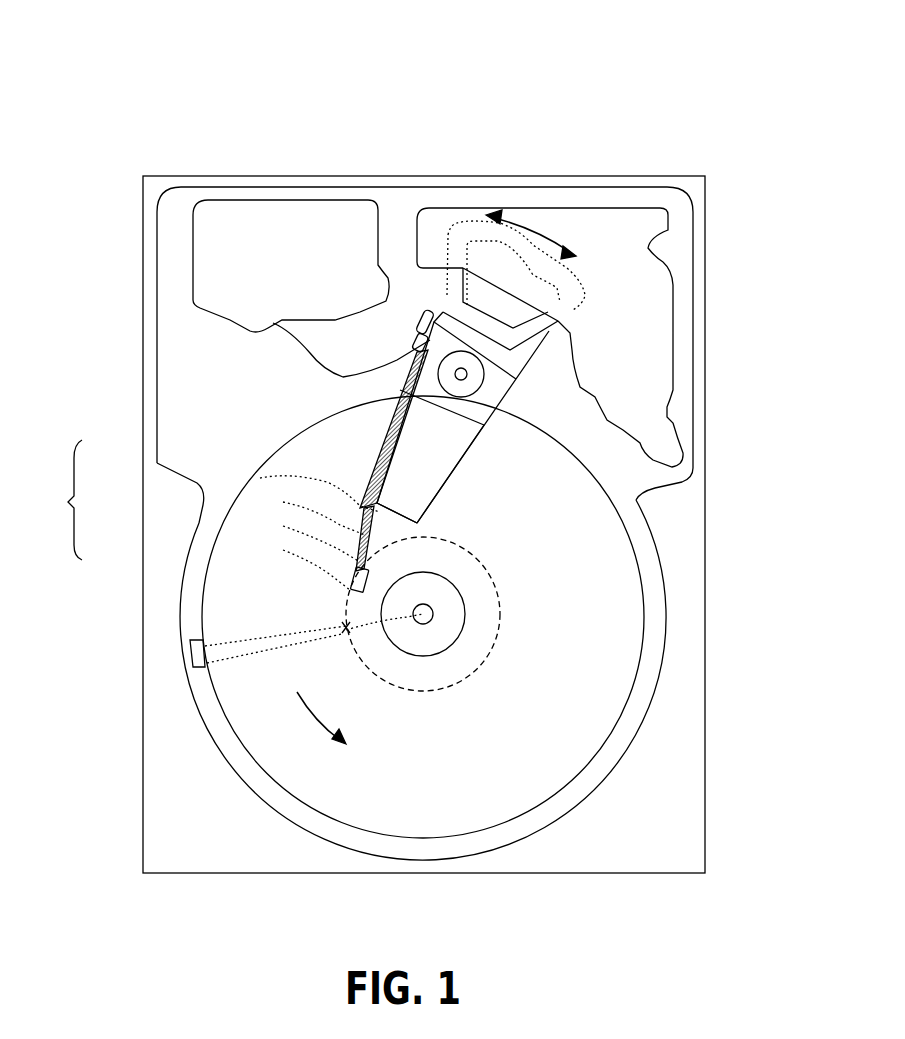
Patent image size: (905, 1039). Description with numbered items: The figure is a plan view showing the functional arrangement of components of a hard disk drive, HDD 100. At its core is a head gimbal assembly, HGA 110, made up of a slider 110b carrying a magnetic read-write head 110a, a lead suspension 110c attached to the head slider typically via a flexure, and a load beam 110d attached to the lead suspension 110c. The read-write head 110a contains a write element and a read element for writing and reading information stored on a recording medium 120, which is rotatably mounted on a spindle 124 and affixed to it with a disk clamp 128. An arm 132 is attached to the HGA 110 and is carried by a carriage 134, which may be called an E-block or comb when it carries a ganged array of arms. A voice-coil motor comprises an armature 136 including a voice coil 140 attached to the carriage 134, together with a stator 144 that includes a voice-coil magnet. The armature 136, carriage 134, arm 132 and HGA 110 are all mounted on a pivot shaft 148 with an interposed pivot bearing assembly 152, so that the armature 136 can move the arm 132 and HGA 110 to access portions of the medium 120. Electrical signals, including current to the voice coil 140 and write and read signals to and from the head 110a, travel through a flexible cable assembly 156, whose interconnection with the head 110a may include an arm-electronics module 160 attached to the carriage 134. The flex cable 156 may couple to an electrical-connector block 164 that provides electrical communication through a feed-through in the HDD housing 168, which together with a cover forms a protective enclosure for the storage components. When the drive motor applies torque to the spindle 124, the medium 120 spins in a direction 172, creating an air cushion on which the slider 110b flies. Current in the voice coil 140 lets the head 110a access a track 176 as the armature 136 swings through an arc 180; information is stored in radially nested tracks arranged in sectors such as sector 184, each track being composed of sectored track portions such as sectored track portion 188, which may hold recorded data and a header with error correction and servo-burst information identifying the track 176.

The hard disk drive 100 is at (88, 67).
The head gimbal assembly 110 is at (54, 500).
The magnetic read-write head 110a is at (283, 550).
The slider 110b is at (283, 526).
The lead suspension 110c is at (283, 502).
The load beam 110d is at (260, 478).
The recording medium 120 is at (583, 578).
The spindle 124 is at (433, 612).
The disk clamp 128 is at (447, 630).
The arm 132 is at (418, 473).
The carriage 134 is at (476, 404).
The armature 136 is at (423, 255).
The voice coil 140 is at (450, 295).
The stator 144 is at (647, 290).
The pivot shaft 148 is at (466, 372).
The pivot bearing assembly 152 is at (472, 387).
The flexible cable assembly 156 is at (298, 351).
The arm-electronics module 160 is at (418, 340).
The electrical-connector block 164 is at (215, 262).
The HDD housing 168 is at (690, 189).
The direction 172 is at (340, 720).
The track 176 is at (490, 584).
The arc 180 is at (528, 220).
The sector 184 is at (183, 653).
The sectored track portion 188 is at (347, 630).